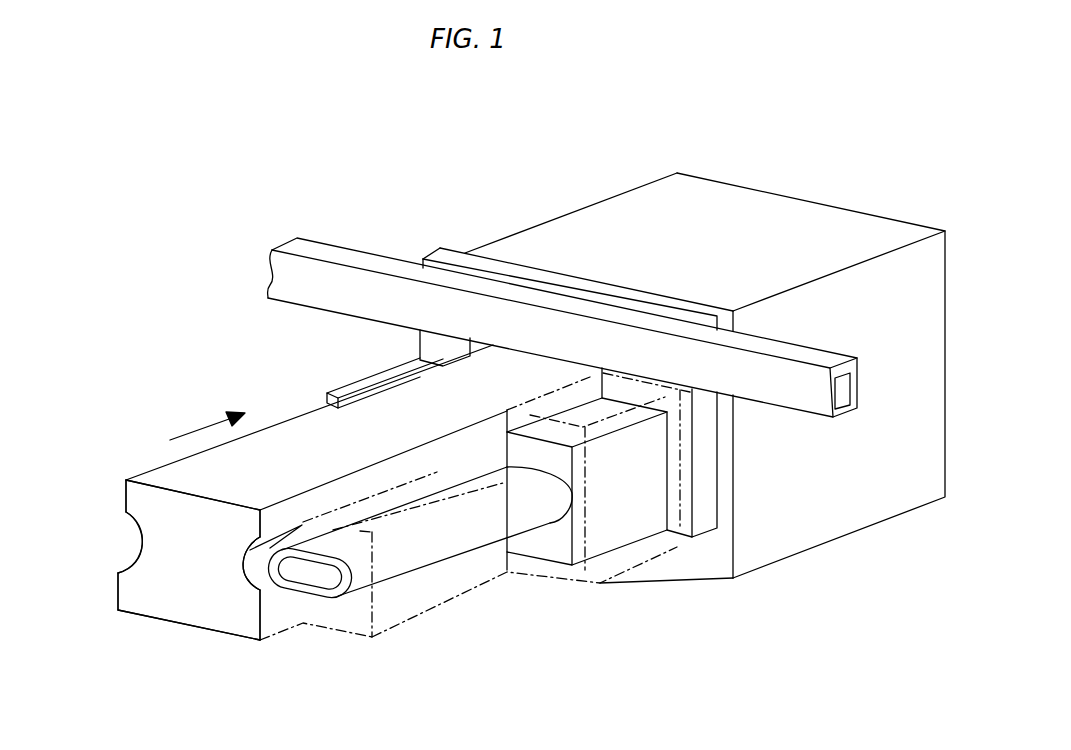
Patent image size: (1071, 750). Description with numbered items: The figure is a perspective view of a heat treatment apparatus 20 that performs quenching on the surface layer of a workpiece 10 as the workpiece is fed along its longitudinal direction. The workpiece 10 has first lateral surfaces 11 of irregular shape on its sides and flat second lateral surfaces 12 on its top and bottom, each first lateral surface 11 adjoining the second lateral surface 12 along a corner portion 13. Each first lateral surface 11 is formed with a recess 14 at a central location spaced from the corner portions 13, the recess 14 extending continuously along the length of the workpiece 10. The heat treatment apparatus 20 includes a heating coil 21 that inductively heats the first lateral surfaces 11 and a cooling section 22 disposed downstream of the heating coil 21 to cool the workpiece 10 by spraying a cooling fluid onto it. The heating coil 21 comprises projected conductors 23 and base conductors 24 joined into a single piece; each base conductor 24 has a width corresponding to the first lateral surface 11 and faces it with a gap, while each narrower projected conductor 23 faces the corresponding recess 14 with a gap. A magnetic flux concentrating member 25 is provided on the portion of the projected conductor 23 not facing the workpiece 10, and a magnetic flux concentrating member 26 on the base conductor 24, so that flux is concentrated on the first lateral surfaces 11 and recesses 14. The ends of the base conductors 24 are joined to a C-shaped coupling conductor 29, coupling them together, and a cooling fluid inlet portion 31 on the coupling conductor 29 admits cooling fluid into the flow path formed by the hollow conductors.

The workpiece 10 is at (268, 415).
The first lateral surface 11 is at (120, 493).
The second lateral surface 12 is at (175, 470).
The corner portion 13 is at (125, 480).
The recess 14 is at (135, 543).
The heat treatment apparatus 20 is at (526, 188).
The heating coil 21 is at (545, 570).
The cooling section 22 is at (700, 187).
The projected conductor 23 is at (425, 565).
The base conductor 24 is at (362, 380).
The magnetic flux concentrating member 25 is at (383, 640).
The magnetic flux concentrating member 26 is at (595, 585).
The coupling conductor 29 is at (446, 262).
The cooling fluid inlet portion 31 is at (332, 250).